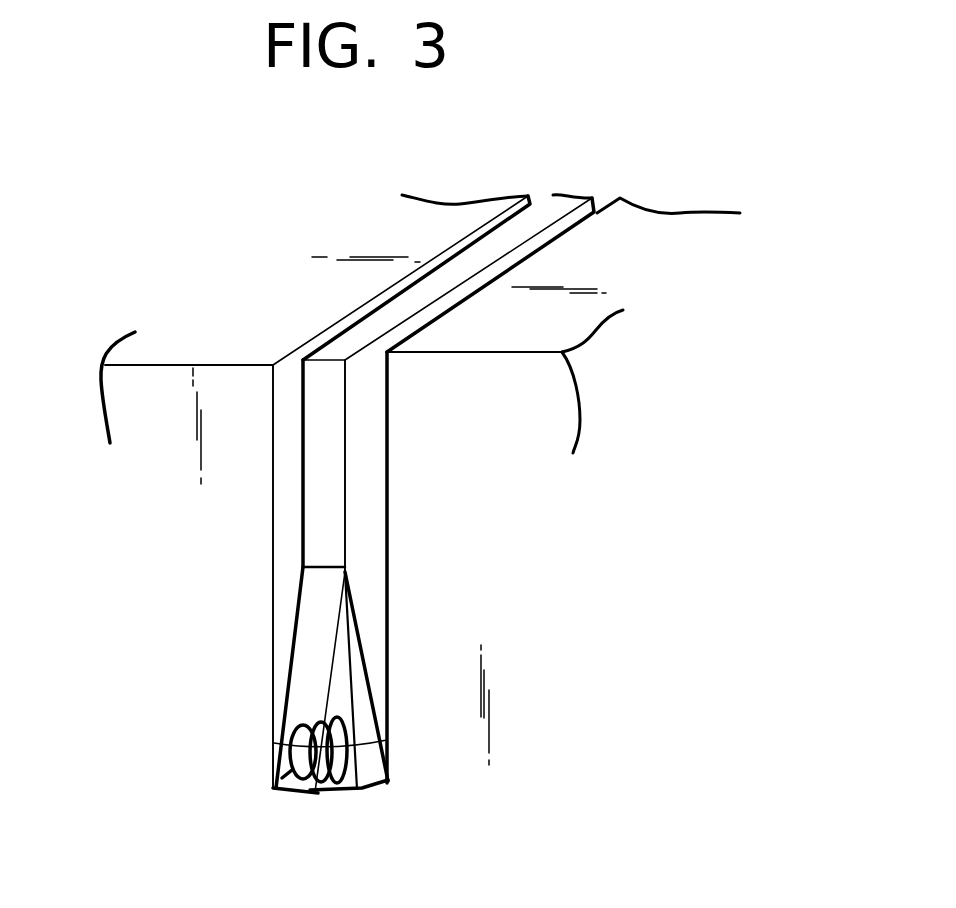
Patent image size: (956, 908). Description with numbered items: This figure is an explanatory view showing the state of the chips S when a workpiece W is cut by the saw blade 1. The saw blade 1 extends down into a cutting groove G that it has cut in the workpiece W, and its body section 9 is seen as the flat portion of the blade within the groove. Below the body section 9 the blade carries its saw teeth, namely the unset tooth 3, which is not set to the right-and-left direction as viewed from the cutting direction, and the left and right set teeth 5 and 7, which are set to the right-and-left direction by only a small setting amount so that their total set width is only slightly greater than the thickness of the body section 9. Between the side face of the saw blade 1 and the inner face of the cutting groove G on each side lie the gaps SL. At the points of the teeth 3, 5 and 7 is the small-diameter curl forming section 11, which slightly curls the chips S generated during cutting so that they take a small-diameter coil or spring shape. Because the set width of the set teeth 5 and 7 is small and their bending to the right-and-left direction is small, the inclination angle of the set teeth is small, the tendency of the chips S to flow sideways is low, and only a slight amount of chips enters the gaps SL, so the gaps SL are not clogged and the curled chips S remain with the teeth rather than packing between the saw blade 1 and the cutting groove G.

The saw blade 1 is at (309, 573).
The unset tooth 3 is at (342, 688).
The left set tooth 5 is at (298, 685).
The right set tooth 7 is at (370, 730).
The body section 9 is at (333, 467).
The small-diameter curl forming section 11 is at (375, 767).
The workpiece W is at (133, 392).
The cutting groove G is at (285, 368).
The gaps SL is at (370, 560).
The chips S is at (333, 795).